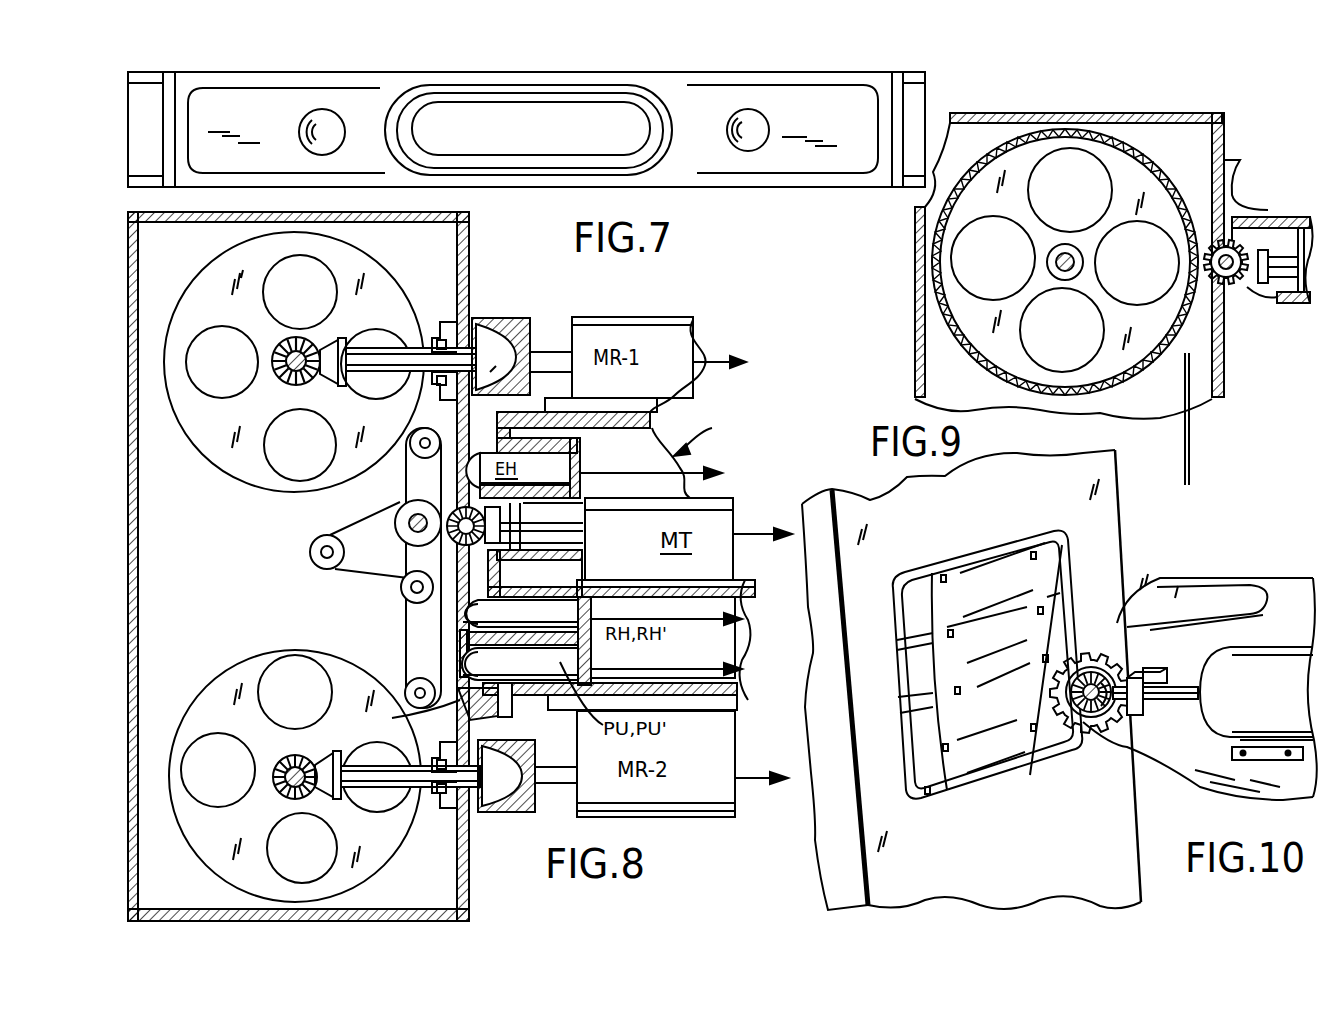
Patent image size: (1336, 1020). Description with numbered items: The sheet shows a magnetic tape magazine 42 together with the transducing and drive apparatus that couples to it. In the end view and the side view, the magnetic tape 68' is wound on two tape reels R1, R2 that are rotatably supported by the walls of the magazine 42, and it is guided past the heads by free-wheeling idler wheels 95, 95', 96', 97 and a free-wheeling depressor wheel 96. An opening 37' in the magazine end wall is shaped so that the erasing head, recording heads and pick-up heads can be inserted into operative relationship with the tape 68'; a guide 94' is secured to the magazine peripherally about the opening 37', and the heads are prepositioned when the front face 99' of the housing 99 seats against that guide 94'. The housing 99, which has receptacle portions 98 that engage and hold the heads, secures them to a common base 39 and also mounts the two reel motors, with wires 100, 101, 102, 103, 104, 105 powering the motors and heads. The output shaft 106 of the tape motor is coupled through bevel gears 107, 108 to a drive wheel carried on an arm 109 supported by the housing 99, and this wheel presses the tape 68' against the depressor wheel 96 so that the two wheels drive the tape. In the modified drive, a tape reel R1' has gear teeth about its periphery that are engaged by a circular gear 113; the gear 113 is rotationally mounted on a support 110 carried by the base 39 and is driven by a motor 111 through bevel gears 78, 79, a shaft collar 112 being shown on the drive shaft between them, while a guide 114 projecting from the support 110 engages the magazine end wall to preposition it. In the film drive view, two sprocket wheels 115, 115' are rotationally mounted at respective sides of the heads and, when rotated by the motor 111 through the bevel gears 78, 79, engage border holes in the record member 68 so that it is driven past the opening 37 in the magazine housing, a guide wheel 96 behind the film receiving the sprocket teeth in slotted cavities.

In FIG. 7, the guide 94' is at (528, 108).
In FIG. 8, the guide 94' is at (413, 716).
In FIG. 7, the opening 37 is at (534, 98).
In FIG. 8, the magazine 42 is at (469, 862).
In FIG. 10, the magazine 42 is at (1141, 862).
In FIG. 8, the tape reel R1 is at (291, 365).
In FIG. 8, the tape reel R2 is at (220, 672).
In FIG. 9, the tape reel R1' is at (1065, 262).
In FIG. 8, the idler wheel 95 is at (409, 433).
In FIG. 8, the idler wheel 95' is at (410, 679).
In FIG. 8, the depressor wheel 96 is at (394, 523).
In FIG. 8, the idler wheel 96' is at (400, 592).
In FIG. 8, the idler wheel 97 is at (310, 553).
In FIG. 8, the bevel gear 108 is at (415, 568).
In FIG. 9, the record member 68 is at (1206, 429).
In FIG. 10, the record member 68 is at (988, 681).
In FIG. 8, the magnetic tape 68' is at (361, 553).
In FIG. 8, the opening 37' is at (480, 640).
In FIG. 8, the base 39 is at (707, 434).
In FIG. 8, the receptacle portion 98 is at (578, 452).
In FIG. 8, the housing 99 is at (604, 407).
In FIG. 8, the front face 99' is at (500, 710).
In FIG. 8, the wire 100 is at (693, 358).
In FIG. 8, the wire 101 is at (698, 468).
In FIG. 8, the wire 102 is at (740, 530).
In FIG. 8, the wire 103 is at (616, 620).
In FIG. 8, the wire 104 is at (660, 668).
In FIG. 8, the wire 105 is at (742, 778).
In FIG. 8, the output shaft 106 is at (571, 525).
In FIG. 8, the bevel gear 107 is at (582, 543).
In FIG. 8, the arm 109 is at (505, 570).
In FIG. 9, the support 110 is at (1273, 218).
In FIG. 9, the motor 111 is at (1295, 305).
In FIG. 10, the motor 111 is at (1263, 703).
In FIG. 9, the drive shaft collar 112 is at (1258, 247).
In FIG. 9, the circular gear 113 is at (1232, 290).
In FIG. 9, the guide 114 is at (1240, 162).
In FIG. 10, the sprocket wheel 115 is at (1090, 649).
In FIG. 10, the sprocket wheel 115' is at (1200, 668).
In FIG. 10, the bevel gear 78 is at (1103, 717).
In FIG. 10, the bevel gear 79 is at (1087, 714).